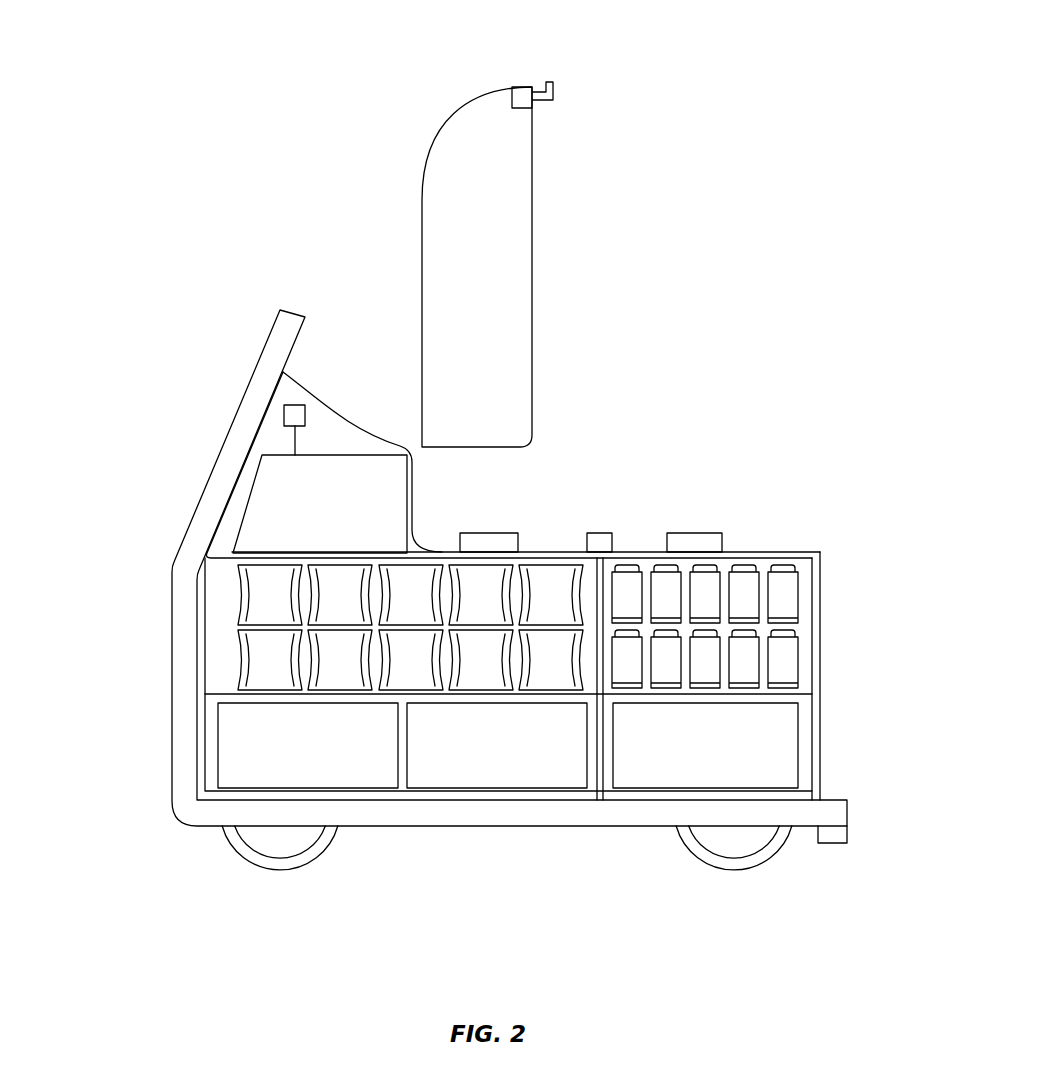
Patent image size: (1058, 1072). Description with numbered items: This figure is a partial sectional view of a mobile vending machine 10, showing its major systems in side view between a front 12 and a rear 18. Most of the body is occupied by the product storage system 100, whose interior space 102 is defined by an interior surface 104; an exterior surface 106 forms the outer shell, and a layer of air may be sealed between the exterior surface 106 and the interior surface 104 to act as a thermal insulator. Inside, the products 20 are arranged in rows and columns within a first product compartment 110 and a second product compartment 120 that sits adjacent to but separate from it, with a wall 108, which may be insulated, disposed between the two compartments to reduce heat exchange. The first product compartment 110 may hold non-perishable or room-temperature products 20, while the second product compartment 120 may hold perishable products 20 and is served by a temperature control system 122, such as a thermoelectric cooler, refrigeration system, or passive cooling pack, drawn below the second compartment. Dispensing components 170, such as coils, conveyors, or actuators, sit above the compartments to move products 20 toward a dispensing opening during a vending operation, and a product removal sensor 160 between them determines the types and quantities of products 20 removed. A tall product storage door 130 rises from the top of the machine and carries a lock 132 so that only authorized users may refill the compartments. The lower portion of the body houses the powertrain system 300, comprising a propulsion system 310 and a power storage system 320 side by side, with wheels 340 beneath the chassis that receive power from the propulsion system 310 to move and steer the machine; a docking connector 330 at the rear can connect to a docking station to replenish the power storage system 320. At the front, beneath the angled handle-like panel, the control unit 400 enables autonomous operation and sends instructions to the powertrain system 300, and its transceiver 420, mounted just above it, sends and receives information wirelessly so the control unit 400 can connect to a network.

The mobile vending machine 10 is at (289, 212).
The front 12 is at (157, 554).
The rear 18 is at (847, 601).
The products 20 is at (270, 646).
The product storage system 100 is at (527, 490).
The interior space 102 is at (232, 600).
The interior surface 104 is at (223, 672).
The exterior surface 106 is at (172, 747).
The wall 108 is at (602, 790).
The first product compartment 110 is at (518, 570).
The second product compartment 120 is at (763, 565).
The temperature control system 122 is at (773, 757).
The product storage door 130 is at (447, 143).
The lock 132 is at (523, 92).
The product removal sensor 160 is at (603, 530).
The dispensing components 170 is at (480, 532).
The powertrain system 300 is at (439, 845).
The propulsion system 310 is at (337, 768).
The power storage system 320 is at (490, 768).
The docking connector 330 is at (833, 837).
The wheels 340 is at (284, 872).
The control unit 400 is at (283, 492).
The transceiver 420 is at (298, 417).